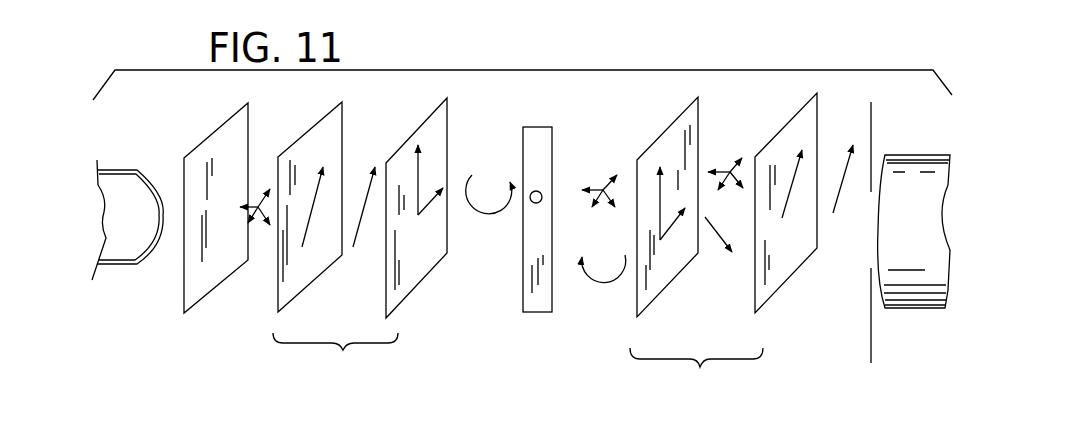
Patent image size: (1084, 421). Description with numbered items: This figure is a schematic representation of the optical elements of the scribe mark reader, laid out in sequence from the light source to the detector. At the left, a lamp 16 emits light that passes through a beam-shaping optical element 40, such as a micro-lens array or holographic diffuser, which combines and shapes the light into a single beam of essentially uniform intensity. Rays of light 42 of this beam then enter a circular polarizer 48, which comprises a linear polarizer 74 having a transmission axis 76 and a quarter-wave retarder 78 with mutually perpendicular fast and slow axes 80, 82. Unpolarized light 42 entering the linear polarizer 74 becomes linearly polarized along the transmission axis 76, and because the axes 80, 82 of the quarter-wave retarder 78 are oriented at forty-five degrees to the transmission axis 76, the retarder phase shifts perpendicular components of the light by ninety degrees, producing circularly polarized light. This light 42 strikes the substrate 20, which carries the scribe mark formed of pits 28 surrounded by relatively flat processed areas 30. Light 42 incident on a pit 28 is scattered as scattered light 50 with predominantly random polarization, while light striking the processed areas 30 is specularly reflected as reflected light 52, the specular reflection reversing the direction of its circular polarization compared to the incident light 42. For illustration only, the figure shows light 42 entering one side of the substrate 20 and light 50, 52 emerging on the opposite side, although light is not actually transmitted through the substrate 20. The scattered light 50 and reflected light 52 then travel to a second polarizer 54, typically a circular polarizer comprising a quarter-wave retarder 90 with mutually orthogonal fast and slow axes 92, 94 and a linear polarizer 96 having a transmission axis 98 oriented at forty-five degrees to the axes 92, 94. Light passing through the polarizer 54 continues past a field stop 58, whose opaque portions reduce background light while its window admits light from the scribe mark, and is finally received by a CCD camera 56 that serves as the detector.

The lamp 16 is at (131, 264).
The substrate 20 is at (535, 313).
The pit 28 is at (536, 191).
The processed area 30 is at (540, 237).
The beam-shaping optical element 40 is at (200, 304).
The light 42 is at (257, 193).
The circular polarizer 48 is at (335, 359).
The scattered light 50 is at (602, 182).
The reflected light 52 is at (603, 294).
The polarizer 54 is at (696, 374).
The CCD camera 56 is at (927, 155).
The field stop 58 is at (871, 124).
The linear polarizer 74 is at (300, 291).
The transmission axis 76 is at (307, 228).
The quarter-wave retarder 78 is at (405, 290).
The fast axis 80 is at (422, 166).
The slow axis 82 is at (428, 207).
The quarter-wave retarder 90 is at (658, 293).
The fast axis 92 is at (660, 183).
The slow axis 94 is at (667, 228).
The linear polarizer 96 is at (785, 283).
The transmission axis 98 is at (787, 194).